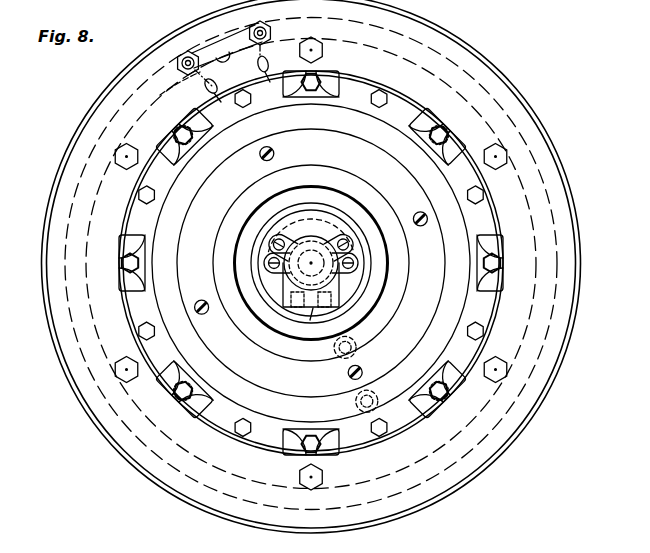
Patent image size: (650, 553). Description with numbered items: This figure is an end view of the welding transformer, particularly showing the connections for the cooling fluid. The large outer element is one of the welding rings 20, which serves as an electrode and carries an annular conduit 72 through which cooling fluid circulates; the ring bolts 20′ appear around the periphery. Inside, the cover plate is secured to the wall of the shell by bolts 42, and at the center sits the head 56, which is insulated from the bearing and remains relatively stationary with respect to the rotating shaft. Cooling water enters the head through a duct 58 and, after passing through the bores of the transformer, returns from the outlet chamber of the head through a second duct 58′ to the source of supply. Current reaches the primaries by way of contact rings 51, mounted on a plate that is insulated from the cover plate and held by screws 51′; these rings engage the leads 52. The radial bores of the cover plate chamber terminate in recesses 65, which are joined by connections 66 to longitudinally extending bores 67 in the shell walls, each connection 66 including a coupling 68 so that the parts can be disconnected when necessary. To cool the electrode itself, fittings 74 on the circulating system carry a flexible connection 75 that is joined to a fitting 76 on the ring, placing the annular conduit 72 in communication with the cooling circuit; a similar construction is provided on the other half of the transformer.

The welding ring 20 is at (577, 291).
The rim bolts 20′ is at (118, 373).
The bolt 42 is at (148, 322).
The contact ring 51 is at (362, 145).
The screw 51′ is at (201, 299).
The lead 52 is at (357, 348).
The head 56 is at (338, 222).
The duct 58 is at (293, 317).
The duct 58′ is at (313, 327).
The recess 65 is at (176, 150).
The connection 66 is at (133, 262).
The longitudinally extending bore 67 is at (172, 405).
The coupling 68 is at (320, 455).
The annular conduit 72 is at (458, 72).
The fitting 74 is at (213, 93).
The flexible connection 75 is at (227, 85).
The fitting 76 is at (230, 31).